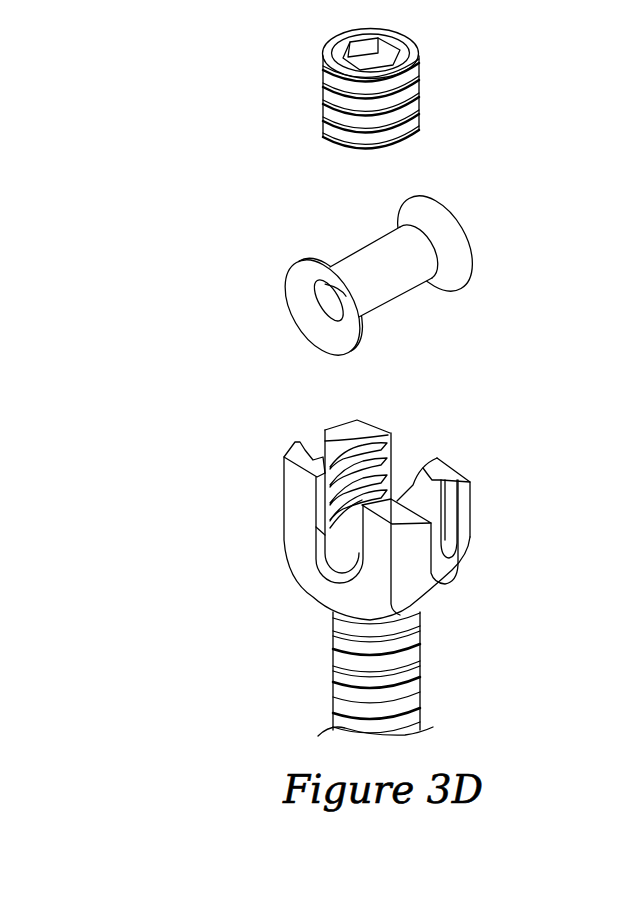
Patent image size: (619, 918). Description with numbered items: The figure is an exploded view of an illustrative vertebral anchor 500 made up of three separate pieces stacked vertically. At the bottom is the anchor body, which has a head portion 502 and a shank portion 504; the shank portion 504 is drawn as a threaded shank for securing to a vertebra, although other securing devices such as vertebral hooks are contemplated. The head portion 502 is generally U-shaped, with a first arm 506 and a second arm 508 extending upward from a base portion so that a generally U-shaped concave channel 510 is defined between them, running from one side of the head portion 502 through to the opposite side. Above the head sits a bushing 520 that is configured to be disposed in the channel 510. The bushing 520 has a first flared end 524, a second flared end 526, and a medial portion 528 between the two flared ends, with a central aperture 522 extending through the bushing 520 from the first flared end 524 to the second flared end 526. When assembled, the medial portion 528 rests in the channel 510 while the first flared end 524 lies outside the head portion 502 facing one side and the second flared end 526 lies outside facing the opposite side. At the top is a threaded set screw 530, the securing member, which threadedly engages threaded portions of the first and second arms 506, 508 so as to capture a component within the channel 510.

The vertebral anchor 500 is at (377, 567).
The head portion 502 is at (364, 525).
The shank portion 504 is at (400, 697).
The first arm 506 is at (293, 498).
The second arm 508 is at (468, 510).
The channel 510 is at (340, 560).
The bushing 520 is at (367, 275).
The central aperture 522 is at (335, 304).
The first flared end 524 is at (298, 286).
The second flared end 526 is at (445, 235).
The medial portion 528 is at (393, 292).
The set screw 530 is at (402, 58).